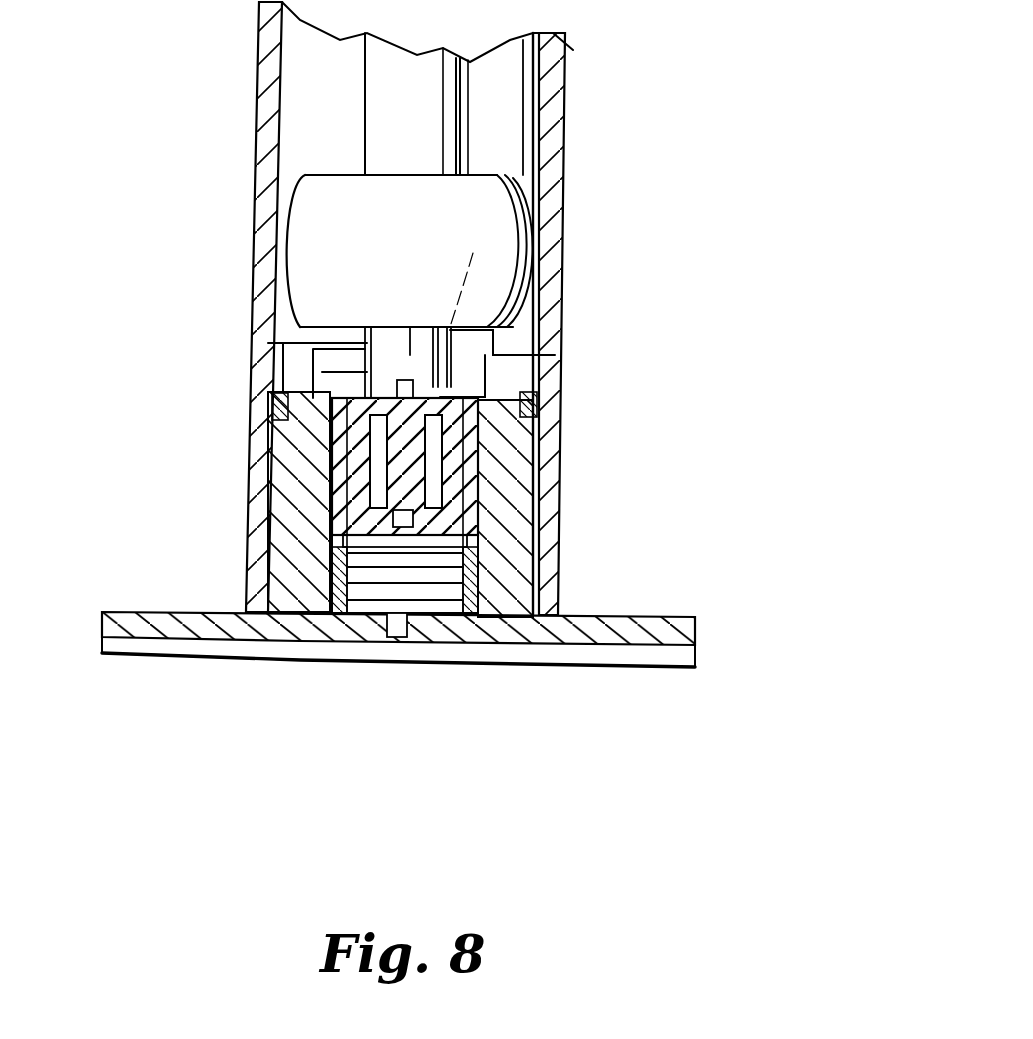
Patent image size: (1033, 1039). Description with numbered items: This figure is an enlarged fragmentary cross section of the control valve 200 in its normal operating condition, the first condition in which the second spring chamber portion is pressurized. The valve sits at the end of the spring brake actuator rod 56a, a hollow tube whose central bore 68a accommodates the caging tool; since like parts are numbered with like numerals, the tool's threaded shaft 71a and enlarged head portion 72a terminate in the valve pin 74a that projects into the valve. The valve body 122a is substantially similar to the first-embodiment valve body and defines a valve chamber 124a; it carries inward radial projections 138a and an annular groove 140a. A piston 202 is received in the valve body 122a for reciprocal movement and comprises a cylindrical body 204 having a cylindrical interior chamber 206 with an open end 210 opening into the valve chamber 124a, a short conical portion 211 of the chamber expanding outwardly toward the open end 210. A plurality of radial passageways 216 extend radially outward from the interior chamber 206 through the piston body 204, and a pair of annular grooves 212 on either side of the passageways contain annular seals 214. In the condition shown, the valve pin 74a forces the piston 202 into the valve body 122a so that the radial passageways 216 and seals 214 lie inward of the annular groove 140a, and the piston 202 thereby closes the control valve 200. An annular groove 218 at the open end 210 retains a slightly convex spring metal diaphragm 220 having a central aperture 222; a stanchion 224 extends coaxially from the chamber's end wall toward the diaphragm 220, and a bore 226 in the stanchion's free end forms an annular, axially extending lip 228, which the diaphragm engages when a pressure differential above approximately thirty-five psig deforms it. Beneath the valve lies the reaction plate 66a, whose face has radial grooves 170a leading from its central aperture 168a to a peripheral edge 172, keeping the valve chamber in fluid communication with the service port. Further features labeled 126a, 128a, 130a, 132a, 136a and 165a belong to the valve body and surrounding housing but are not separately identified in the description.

The spring brake actuator rod 56a is at (567, 73).
The central bore 68a is at (507, 115).
The chamber 71a is at (427, 137).
The bladder 72a is at (497, 249).
The wall portion 128a is at (537, 297).
The inward radial projections 138a is at (540, 340).
The valve pin 74a is at (418, 373).
The ring 132a is at (537, 383).
The retainer 130a is at (540, 416).
The piston 202 is at (505, 452).
The cylindrical interior chamber 206 is at (520, 432).
The annular grooves 212 is at (275, 420).
The annular seals 214 is at (273, 386).
The cylindrical body 204 is at (480, 500).
The annular groove 218 is at (470, 520).
The flange 136a is at (522, 590).
The valve body 122a is at (520, 598).
The base plate 66a is at (697, 638).
The bottom surface 170a is at (640, 664).
The peripheral edge 172 is at (100, 643).
The valve chamber 124a is at (478, 585).
The bore 126a is at (453, 630).
The open end 210 is at (410, 637).
The aperture 168a is at (403, 600).
The central aperture 222 is at (333, 633).
The spring metal diaphragm 220 is at (285, 637).
The annular groove 140a is at (283, 357).
The shoulder 165a is at (273, 452).
The radial passageways 216 is at (276, 478).
The stanchion 224 is at (275, 508).
The short conical portion 211 is at (275, 532).
The bore 226 is at (275, 543).
The annular axially extending lip 228 is at (275, 573).
The control valve 200 is at (220, 752).